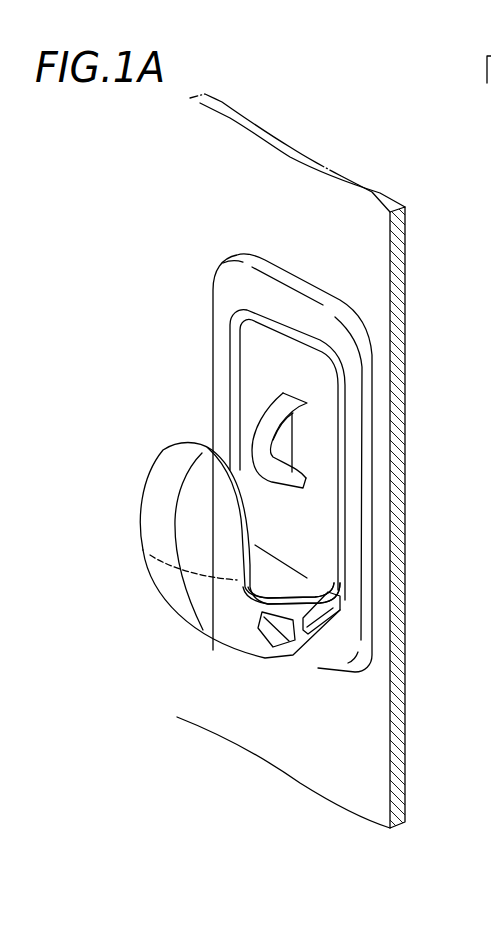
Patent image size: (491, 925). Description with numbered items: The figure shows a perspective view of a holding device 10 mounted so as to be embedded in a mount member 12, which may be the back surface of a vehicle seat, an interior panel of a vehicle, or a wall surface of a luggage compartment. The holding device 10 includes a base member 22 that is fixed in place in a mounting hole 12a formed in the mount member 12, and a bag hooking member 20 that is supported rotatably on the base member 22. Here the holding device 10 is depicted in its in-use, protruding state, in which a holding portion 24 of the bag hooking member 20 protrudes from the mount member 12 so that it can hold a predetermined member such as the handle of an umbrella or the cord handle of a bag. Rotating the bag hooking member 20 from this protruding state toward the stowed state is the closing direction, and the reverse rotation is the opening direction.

The holding device 10 is at (152, 594).
The mount member 12 is at (362, 215).
The mounting hole 12a is at (250, 252).
The bag hooking member 20 is at (160, 498).
The base member 22 is at (343, 345).
The holding portion 24 is at (285, 583).